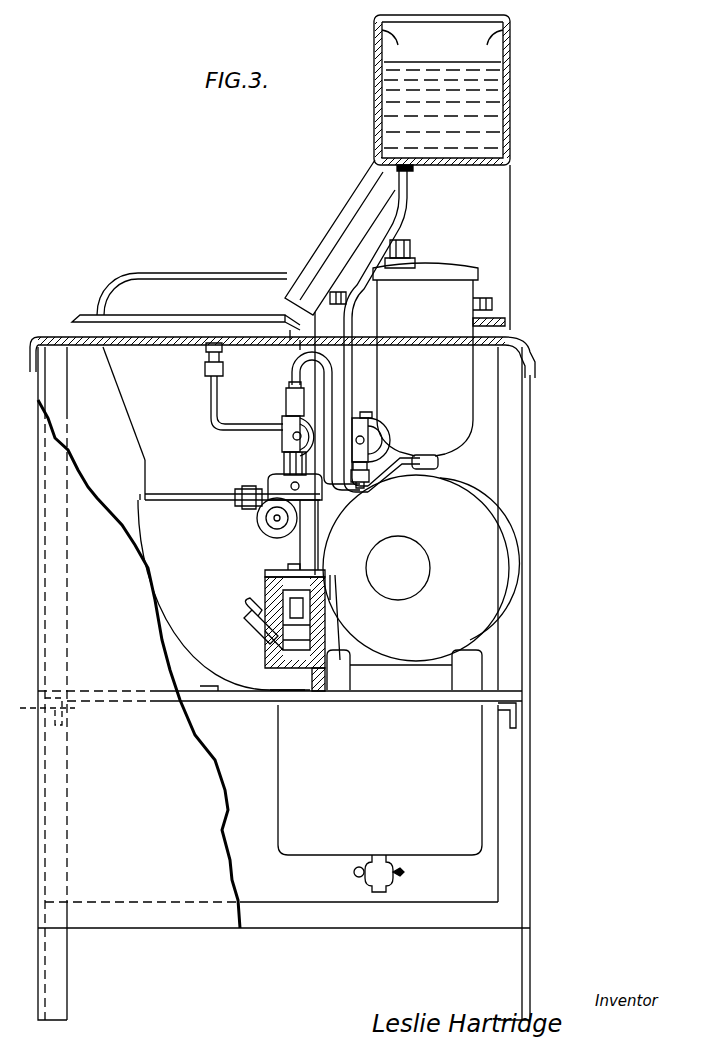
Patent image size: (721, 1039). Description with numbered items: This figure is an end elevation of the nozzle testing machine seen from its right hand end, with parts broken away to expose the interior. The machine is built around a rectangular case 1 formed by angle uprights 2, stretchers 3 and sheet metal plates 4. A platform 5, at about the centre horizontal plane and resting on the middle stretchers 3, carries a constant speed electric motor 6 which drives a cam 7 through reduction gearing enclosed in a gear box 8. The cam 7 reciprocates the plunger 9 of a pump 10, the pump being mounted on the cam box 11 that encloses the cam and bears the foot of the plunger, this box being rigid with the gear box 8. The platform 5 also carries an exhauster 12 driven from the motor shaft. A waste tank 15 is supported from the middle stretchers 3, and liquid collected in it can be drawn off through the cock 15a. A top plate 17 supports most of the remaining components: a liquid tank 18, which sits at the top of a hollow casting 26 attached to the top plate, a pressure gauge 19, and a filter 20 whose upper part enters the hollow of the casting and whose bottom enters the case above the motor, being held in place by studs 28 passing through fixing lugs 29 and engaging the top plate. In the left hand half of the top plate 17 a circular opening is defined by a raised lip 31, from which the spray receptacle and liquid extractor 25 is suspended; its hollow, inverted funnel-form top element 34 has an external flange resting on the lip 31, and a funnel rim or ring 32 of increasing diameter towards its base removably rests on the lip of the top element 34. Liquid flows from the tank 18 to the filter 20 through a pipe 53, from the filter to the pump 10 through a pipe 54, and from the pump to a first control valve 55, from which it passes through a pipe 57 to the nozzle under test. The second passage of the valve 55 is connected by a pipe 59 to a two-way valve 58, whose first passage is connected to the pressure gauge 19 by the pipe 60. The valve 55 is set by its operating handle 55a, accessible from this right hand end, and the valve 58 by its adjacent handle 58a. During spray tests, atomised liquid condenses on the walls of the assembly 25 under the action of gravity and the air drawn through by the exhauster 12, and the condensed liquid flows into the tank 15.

The rectangular case 1 is at (81, 659).
The angle uprights 2 is at (524, 748).
The stretchers 3 is at (45, 708).
The sheet metal plates 4 is at (195, 793).
The platform 5 is at (283, 695).
The constant speed electric motor 6 is at (470, 612).
The cam 7 is at (270, 648).
The gear box 8 is at (330, 575).
The plunger 9 is at (266, 583).
The pump 10 is at (283, 549).
The cam box 11 is at (308, 665).
The exhauster 12 is at (483, 507).
The waste tank 15 is at (470, 824).
The cock 15a is at (404, 873).
The top plate 17 is at (60, 340).
The liquid tank 18 is at (480, 82).
The pressure gauge 19 is at (335, 223).
The filter 20 is at (466, 290).
The spray receptacle and liquid extractor 25 is at (150, 555).
The hollow casting 26 is at (500, 193).
The studs 28 is at (483, 304).
The fixing lugs 29 is at (490, 320).
The raised lip 31 is at (93, 330).
The funnel rim or ring 32 is at (125, 292).
The top element 34 is at (137, 404).
The pipe 53 is at (397, 212).
The pipe 54 is at (318, 498).
The first control valve 55 is at (280, 450).
The operating handle 55a is at (285, 420).
The pipe 57 is at (212, 410).
The two-way valve 58 is at (366, 450).
The handle 58a is at (380, 428).
The pipe 59 is at (318, 362).
The pipe 60 is at (352, 362).